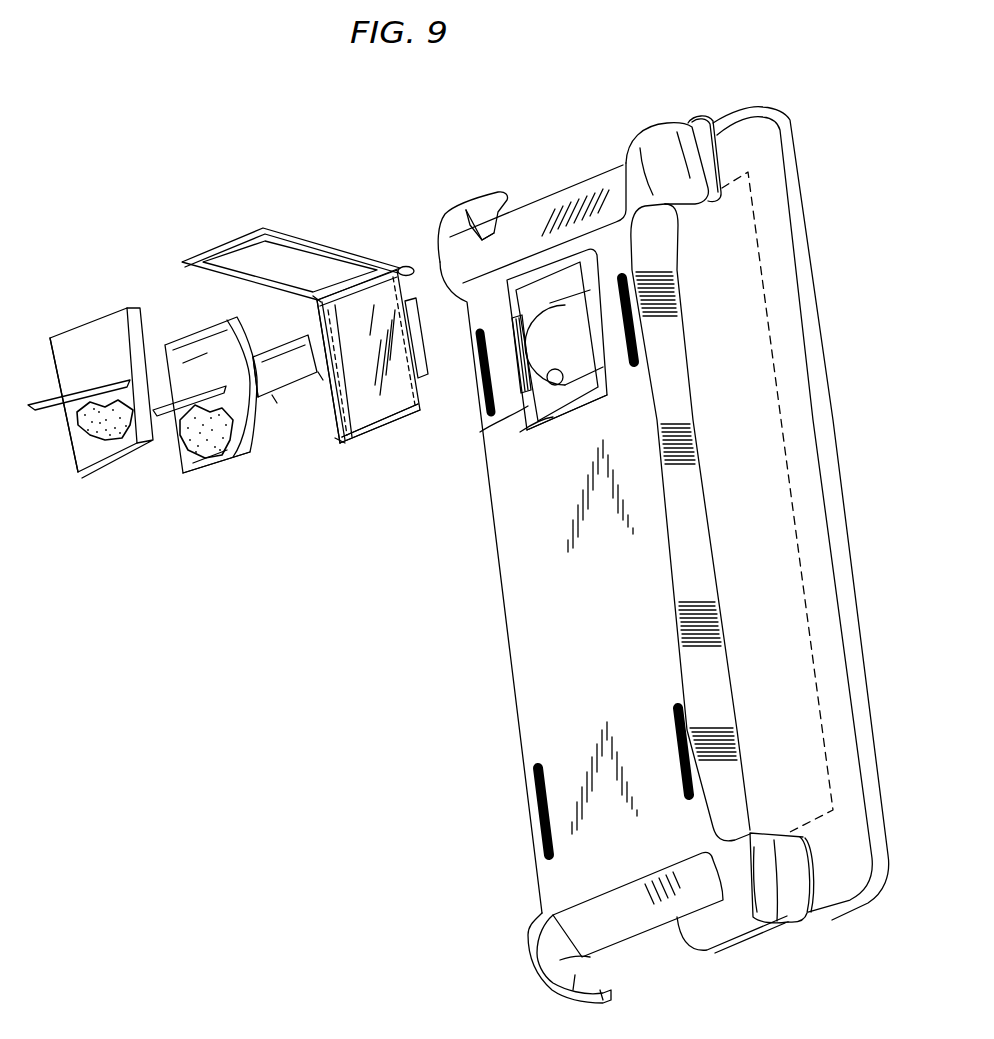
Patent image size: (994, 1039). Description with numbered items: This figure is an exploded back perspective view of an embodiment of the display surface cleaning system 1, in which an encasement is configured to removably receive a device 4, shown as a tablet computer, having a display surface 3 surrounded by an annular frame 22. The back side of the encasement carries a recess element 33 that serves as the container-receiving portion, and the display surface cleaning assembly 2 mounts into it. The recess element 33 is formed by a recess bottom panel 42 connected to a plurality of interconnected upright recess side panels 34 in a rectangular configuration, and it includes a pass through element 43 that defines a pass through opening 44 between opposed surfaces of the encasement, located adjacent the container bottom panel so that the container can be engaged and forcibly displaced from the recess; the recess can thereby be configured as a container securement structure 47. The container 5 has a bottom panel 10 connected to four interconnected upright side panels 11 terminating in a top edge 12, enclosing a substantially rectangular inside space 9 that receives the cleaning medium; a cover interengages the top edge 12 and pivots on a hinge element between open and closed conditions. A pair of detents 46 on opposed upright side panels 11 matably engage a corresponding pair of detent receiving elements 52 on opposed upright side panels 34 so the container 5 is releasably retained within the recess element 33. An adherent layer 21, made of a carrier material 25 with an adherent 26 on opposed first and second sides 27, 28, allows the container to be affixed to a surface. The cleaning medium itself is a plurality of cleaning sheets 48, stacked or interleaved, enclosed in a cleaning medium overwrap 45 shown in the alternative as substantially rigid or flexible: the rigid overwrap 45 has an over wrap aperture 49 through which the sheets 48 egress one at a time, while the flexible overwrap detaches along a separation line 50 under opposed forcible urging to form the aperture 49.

The display surface cleaning system 1 is at (221, 170).
The display surface cleaning assembly 2 is at (175, 240).
The display surface 3 is at (760, 233).
The device 4 is at (656, 555).
The container 5 is at (402, 268).
The inside space 9 is at (373, 420).
The bottom panel 10 is at (392, 412).
The upright side panels 11 is at (327, 327).
The top edge 12 is at (342, 448).
The adherent layer 21 is at (282, 359).
The annular frame 22 is at (805, 160).
The carrier material 25 is at (280, 350).
The adherent 26 is at (319, 378).
The first side 27 is at (257, 360).
The second side 28 is at (320, 306).
The recess element 33 is at (548, 437).
The upright recess side panels 34 is at (525, 283).
The recess bottom panel 42 is at (580, 277).
The pass through element 43 is at (520, 432).
The pass through opening 44 is at (547, 303).
The cleaning medium overwrap 45 is at (90, 343).
The detents 46 is at (520, 360).
The container securement structure 47 is at (480, 432).
The cleaning sheets 48 is at (47, 408).
The over wrap aperture 49 is at (223, 447).
The separation line 50 is at (90, 397).
The detent receiving elements 52 is at (424, 347).